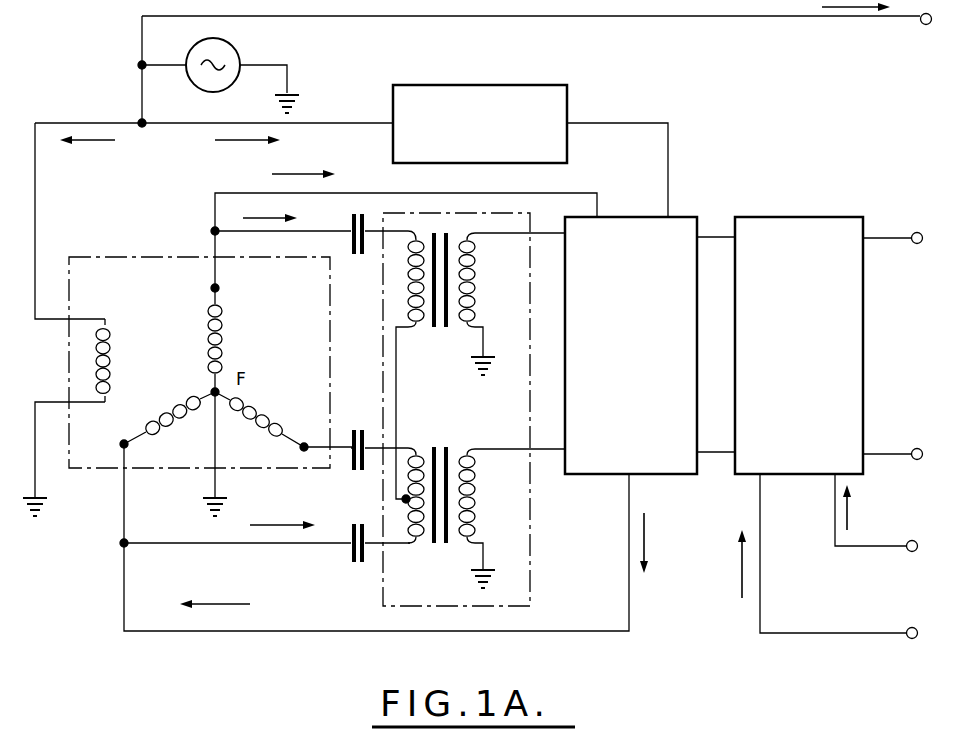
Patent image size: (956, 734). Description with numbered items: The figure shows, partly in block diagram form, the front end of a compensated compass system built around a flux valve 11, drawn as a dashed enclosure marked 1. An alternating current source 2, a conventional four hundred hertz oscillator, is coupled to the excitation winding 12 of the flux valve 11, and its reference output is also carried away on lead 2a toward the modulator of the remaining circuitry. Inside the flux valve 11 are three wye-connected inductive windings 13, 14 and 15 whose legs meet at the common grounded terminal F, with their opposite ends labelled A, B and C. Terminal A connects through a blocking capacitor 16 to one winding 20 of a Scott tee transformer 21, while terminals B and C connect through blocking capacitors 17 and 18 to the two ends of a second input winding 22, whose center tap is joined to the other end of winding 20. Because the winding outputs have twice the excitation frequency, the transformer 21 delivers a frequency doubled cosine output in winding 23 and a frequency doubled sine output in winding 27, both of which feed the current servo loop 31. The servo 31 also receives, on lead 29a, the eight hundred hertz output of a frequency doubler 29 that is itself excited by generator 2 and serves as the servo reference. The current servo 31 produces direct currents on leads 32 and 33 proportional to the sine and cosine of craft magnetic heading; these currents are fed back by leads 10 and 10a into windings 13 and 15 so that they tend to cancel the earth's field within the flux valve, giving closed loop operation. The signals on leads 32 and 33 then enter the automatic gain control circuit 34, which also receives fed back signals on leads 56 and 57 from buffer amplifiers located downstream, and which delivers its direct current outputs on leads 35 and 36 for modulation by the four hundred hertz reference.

The three-phase transducer 1 is at (122, 257).
The alternating current source 2 is at (240, 55).
The lead 2a is at (730, 17).
The lead 10 is at (230, 628).
The lead 10a is at (215, 200).
The flux valve 11 is at (277, 464).
The excitation winding 12 is at (112, 352).
The inductive winding 13 is at (223, 350).
The inductive winding 14 is at (268, 408).
The inductive winding 15 is at (165, 428).
The blocking capacitor 16 is at (357, 258).
The blocking capacitor 17 is at (355, 428).
The blocking capacitor 18 is at (357, 565).
The winding 20 is at (415, 328).
The Scott tee transformer 21 is at (530, 527).
The second input winding 22 is at (412, 545).
The winding 23 is at (481, 270).
The winding 27 is at (493, 473).
The frequency doubler 29 is at (498, 85).
The lead 29a is at (668, 160).
The current servo loop 31 is at (620, 217).
The lead 32 is at (715, 237).
The lead 33 is at (715, 455).
The automatic gain control circuit 34 is at (797, 217).
The lead 35 is at (885, 238).
The lead 36 is at (893, 451).
The feed back lead 56 is at (877, 548).
The feed back lead 57 is at (830, 634).